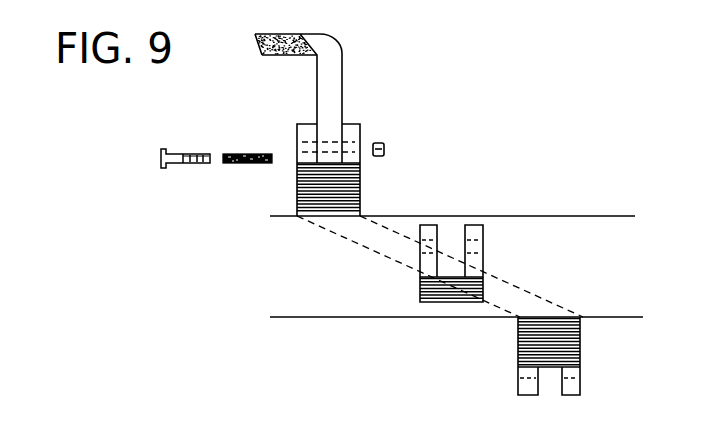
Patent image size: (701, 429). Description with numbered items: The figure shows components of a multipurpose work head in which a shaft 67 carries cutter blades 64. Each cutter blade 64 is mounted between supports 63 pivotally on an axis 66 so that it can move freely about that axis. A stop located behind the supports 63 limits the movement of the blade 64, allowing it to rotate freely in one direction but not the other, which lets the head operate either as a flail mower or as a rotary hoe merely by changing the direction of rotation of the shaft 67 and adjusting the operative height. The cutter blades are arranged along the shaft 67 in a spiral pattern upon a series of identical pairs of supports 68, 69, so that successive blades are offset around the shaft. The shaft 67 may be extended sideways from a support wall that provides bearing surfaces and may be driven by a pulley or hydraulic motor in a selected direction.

The support 63 is at (352, 135).
The cutter blade 64 is at (342, 52).
The axis 66 is at (296, 142).
The shaft 67 is at (340, 298).
The pair of supports 68 is at (478, 230).
The pair of supports 69 is at (527, 385).